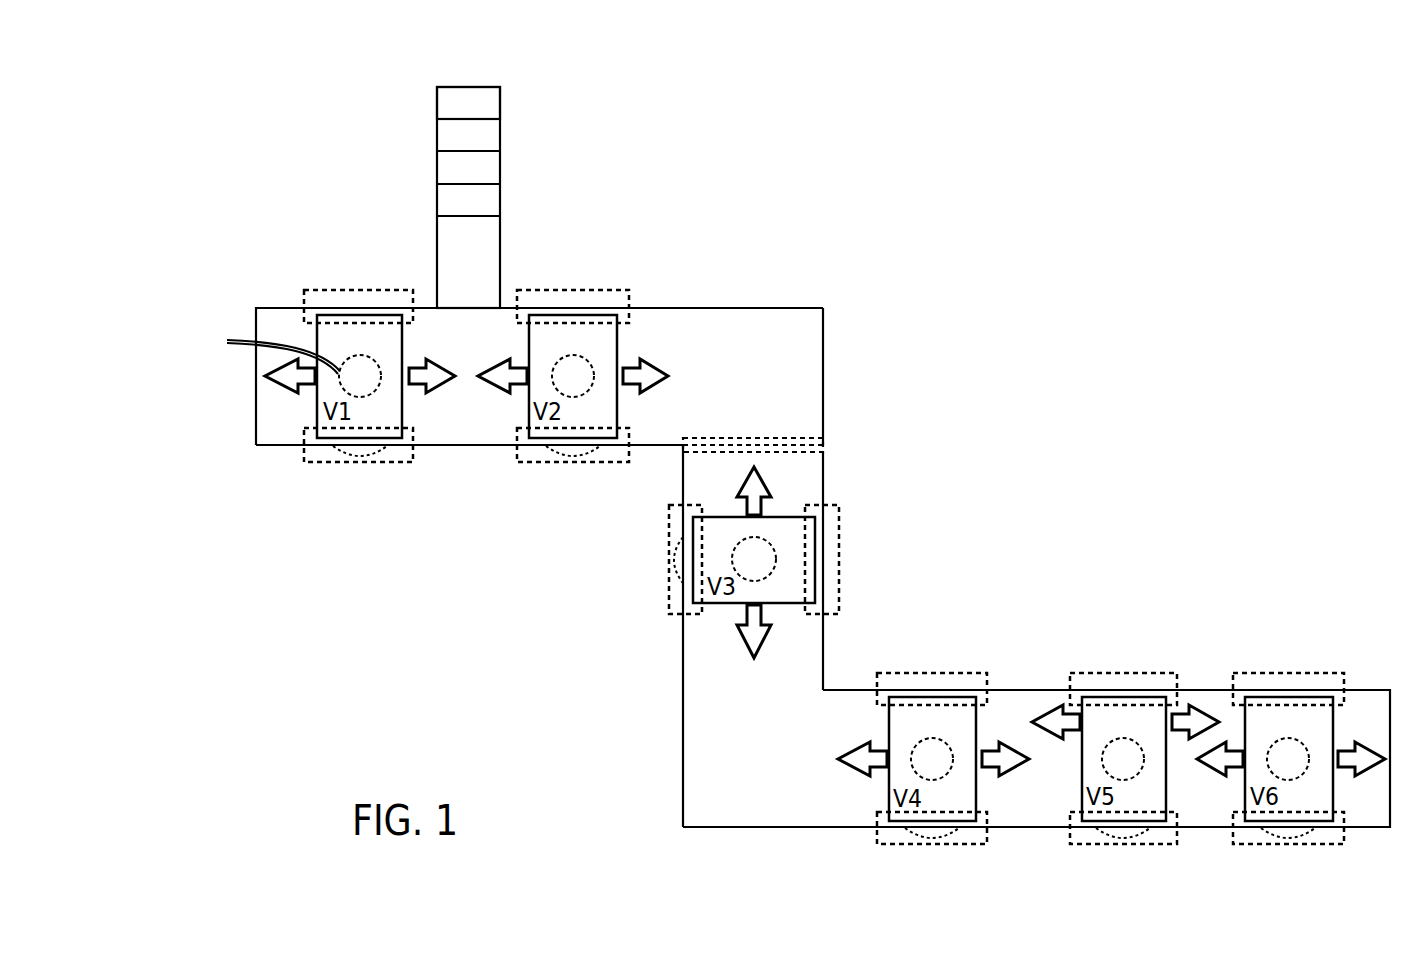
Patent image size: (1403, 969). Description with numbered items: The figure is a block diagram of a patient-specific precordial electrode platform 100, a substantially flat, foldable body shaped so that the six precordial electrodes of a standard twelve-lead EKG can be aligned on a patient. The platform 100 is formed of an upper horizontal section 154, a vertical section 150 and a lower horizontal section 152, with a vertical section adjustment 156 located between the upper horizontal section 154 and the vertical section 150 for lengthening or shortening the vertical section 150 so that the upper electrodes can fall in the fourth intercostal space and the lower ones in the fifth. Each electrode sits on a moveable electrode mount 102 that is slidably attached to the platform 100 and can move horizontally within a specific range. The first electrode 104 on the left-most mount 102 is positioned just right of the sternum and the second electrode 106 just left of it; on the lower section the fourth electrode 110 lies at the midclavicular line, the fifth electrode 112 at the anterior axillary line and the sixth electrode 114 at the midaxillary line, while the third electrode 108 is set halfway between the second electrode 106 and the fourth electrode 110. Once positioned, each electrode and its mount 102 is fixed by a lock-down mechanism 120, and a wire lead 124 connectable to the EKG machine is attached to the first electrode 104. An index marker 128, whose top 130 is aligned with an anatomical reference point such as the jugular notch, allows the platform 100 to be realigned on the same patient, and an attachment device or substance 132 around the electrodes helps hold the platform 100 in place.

The platform 100 is at (276, 307).
The electrode mount 102 is at (316, 412).
The V1 electrode 104 is at (375, 391).
The V2 electrode 106 is at (588, 361).
The V3 electrode 108 is at (770, 545).
The V4 electrode 110 is at (947, 744).
The V5 electrode 112 is at (1138, 774).
The V6 electrode 114 is at (1303, 744).
The lock-down mechanism 120 is at (357, 290).
The wire lead 124 is at (237, 338).
The index marker 128 is at (500, 107).
The top of the marker 130 is at (465, 86).
The attachment device or substance 132 is at (574, 463).
The vertical section 150 is at (823, 640).
The lower horizontal section 152 is at (1015, 828).
The upper horizontal section 154 is at (823, 370).
The vertical section adjustment 156 is at (823, 448).